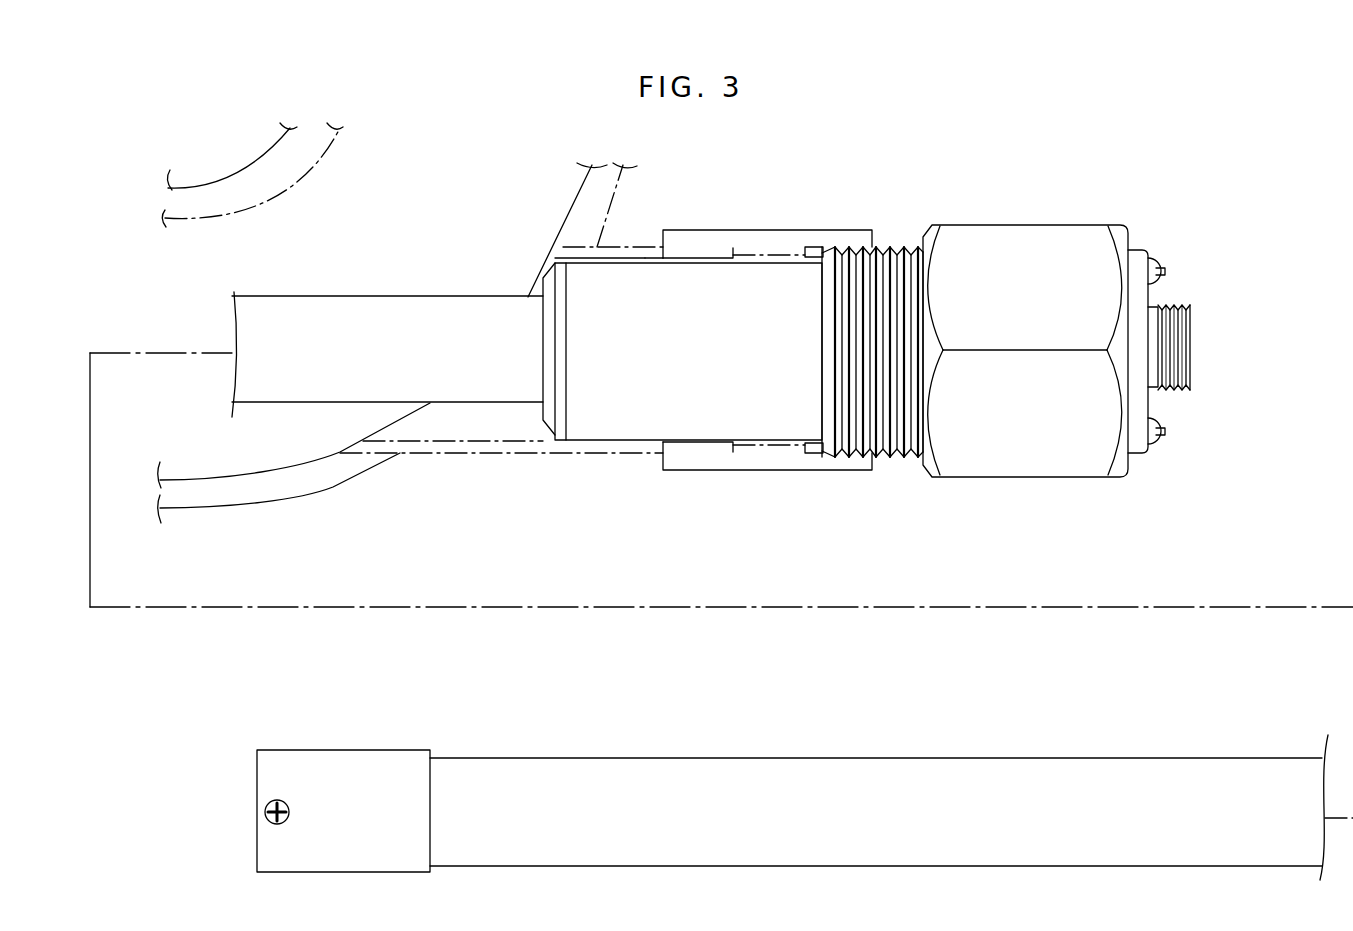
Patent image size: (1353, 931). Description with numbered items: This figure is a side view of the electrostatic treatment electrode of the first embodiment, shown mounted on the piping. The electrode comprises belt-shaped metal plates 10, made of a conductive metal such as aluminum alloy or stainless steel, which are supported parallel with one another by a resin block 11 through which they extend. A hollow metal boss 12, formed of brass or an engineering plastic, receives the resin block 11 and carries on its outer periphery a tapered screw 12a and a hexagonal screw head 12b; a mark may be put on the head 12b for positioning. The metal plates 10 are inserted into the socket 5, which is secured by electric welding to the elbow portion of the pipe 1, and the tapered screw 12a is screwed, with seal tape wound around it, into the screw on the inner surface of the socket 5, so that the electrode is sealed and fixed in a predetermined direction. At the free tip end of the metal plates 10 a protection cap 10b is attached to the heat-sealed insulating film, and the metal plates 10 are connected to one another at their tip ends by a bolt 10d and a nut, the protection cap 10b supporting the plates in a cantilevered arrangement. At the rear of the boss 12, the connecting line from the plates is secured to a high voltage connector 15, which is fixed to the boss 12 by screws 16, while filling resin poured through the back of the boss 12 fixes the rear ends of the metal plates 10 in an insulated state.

The pipe 1 is at (582, 192).
The socket 5 is at (642, 457).
The belt-shaped metal plate 10 is at (393, 293).
The protection cap 10b is at (373, 750).
The bolt 10d is at (270, 803).
The resin block 11 is at (538, 440).
The metal boss 12 is at (1025, 345).
The tapered screw 12a is at (837, 250).
The hexagonal screw head 12b is at (1028, 225).
The high voltage connector 15 is at (1147, 453).
The screw 16 is at (1165, 442).